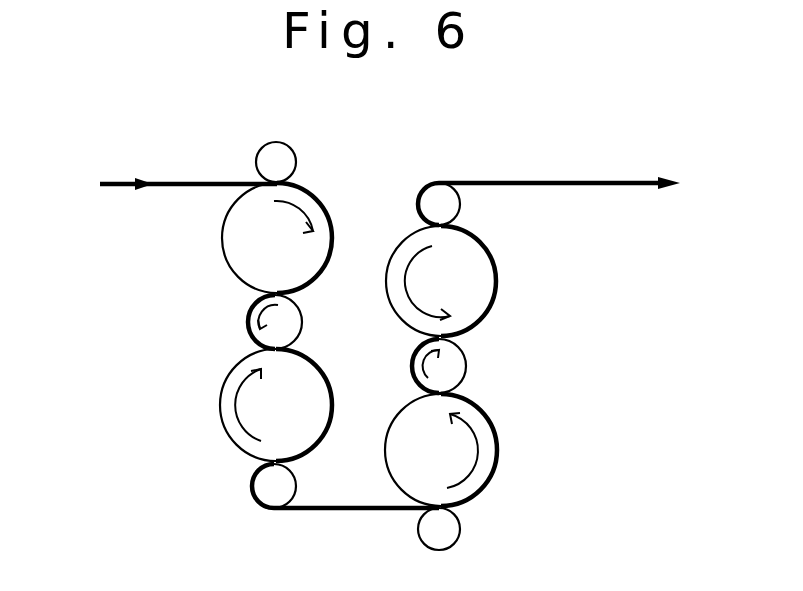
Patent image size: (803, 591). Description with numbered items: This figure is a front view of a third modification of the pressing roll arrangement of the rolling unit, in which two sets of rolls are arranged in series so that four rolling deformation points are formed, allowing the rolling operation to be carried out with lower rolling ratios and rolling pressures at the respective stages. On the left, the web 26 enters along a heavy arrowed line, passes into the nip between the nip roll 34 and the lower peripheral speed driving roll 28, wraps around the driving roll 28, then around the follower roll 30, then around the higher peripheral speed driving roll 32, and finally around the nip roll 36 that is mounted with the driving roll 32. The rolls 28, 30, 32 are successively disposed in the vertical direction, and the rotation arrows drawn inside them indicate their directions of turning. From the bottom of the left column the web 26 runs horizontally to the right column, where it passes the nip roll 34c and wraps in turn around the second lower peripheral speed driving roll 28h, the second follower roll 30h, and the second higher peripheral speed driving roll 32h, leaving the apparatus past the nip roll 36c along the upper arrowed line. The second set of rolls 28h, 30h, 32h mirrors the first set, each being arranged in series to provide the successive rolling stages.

The web 26 is at (120, 182).
The pressure roller 34 is at (285, 155).
The first roller 28 is at (232, 253).
The intermediate roller 30 is at (243, 317).
The second roller 32 is at (230, 400).
The pressure roller 36 is at (263, 485).
The cooling pressure roller 36c is at (438, 192).
The heated second roller 32h is at (474, 275).
The heated intermediate roller 30h is at (455, 372).
The heated first roller 28h is at (485, 455).
The cooling pressure roller 34c is at (455, 523).